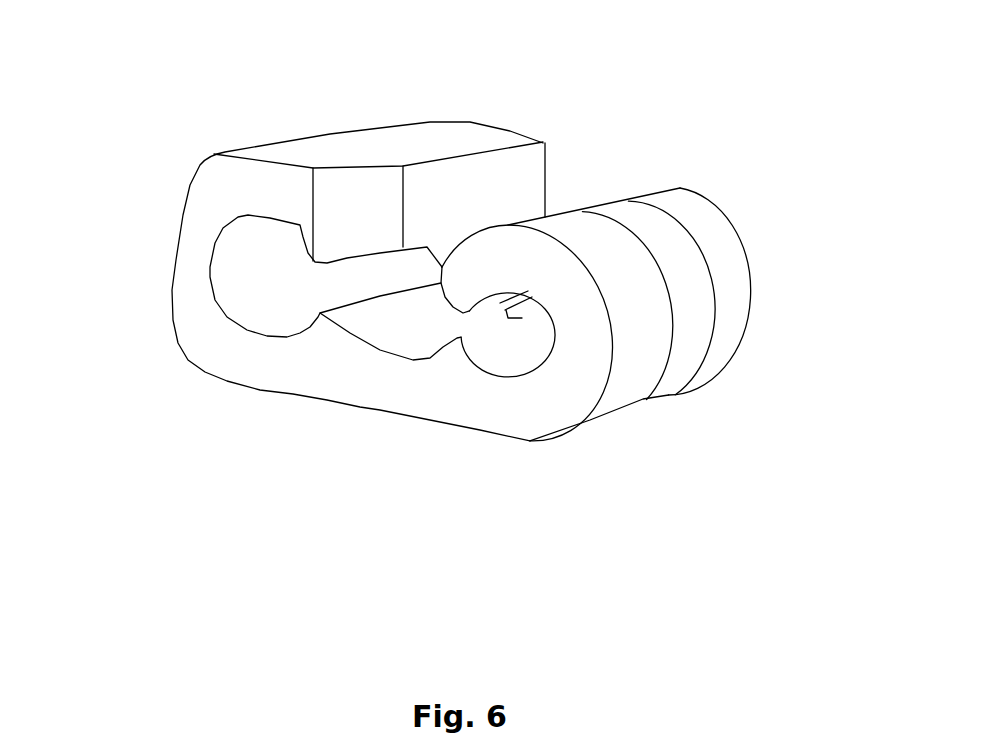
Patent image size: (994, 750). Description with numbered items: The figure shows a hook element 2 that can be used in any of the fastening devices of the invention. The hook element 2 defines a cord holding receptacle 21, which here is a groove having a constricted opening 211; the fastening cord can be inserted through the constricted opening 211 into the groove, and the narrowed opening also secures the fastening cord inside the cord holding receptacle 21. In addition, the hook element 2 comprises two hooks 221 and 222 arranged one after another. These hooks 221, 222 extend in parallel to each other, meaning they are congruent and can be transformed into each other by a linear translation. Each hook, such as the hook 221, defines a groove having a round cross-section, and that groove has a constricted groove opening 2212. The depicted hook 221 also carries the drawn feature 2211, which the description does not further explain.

The hook element 2 is at (150, 117).
The cord holding receptacle 21 is at (211, 267).
The constricted opening 211 is at (327, 293).
The hook 221 is at (588, 348).
The hook 222 is at (737, 308).
The hook protrusion 2211 is at (532, 342).
The constricted groove opening 2212 is at (467, 318).